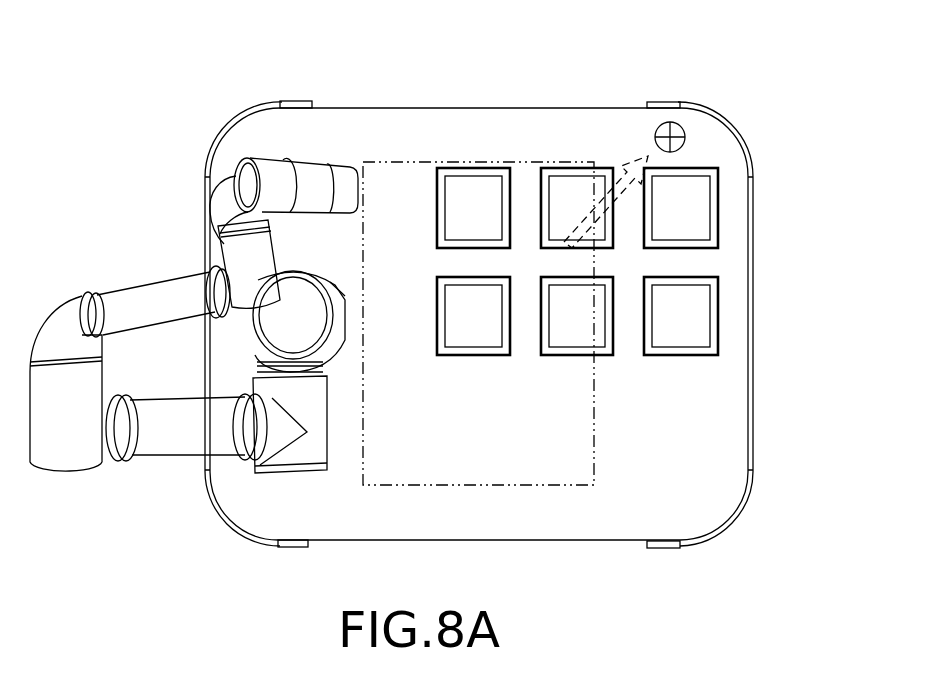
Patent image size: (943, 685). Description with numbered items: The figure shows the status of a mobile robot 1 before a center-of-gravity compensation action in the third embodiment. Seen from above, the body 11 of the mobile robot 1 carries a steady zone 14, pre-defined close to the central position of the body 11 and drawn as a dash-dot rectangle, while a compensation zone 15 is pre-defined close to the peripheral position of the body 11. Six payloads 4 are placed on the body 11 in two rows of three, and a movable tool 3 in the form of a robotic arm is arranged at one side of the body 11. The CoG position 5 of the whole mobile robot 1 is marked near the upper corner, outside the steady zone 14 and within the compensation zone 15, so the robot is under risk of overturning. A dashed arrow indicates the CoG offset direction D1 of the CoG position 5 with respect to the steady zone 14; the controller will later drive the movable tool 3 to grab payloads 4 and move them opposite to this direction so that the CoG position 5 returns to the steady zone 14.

The mobile robot 1 is at (427, 23).
The body 11 is at (481, 108).
The steady zone 14 is at (401, 186).
The CoG offset direction D1 is at (633, 165).
The CoG position 5 is at (681, 127).
The payload 4 is at (690, 208).
The compensation zone 15 is at (690, 410).
The movable tool 3 is at (148, 287).